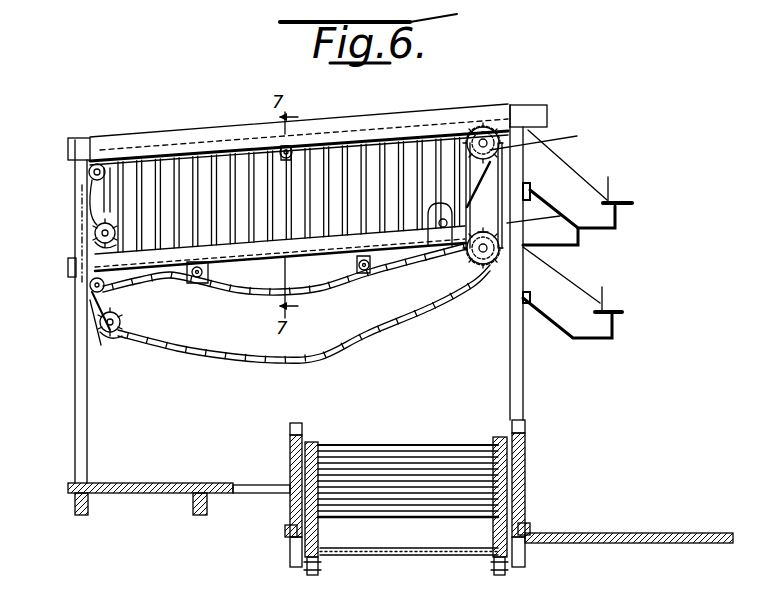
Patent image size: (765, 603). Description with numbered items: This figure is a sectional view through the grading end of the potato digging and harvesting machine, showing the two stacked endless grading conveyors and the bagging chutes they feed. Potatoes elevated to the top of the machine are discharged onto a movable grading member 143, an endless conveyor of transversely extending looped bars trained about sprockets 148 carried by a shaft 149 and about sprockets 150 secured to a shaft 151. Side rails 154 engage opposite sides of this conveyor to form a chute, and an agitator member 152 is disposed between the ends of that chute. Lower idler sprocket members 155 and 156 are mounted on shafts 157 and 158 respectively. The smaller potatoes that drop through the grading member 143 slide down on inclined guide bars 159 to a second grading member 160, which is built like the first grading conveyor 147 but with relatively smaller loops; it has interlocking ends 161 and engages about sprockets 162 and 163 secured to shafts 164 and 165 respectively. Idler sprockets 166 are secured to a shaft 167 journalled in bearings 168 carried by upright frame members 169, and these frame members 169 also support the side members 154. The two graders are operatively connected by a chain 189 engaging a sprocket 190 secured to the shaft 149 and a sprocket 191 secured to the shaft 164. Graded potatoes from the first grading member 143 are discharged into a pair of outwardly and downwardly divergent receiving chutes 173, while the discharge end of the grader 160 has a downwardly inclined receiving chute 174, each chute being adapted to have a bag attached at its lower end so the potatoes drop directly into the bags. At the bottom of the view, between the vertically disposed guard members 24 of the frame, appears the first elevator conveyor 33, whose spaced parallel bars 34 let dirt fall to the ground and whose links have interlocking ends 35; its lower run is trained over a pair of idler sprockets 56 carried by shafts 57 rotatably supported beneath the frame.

The guard member 24 is at (290, 450).
The conveyor 33 is at (391, 441).
The parallel bars 34 is at (447, 443).
The interlocking ends 35 is at (318, 442).
The idler sprockets 56 is at (320, 565).
The shafts 57 is at (412, 538).
The grading member 143 is at (397, 140).
The grading conveyor 147 is at (333, 283).
The sprockets 148 is at (551, 138).
The shaft 149 is at (486, 136).
The sprockets 150 is at (90, 177).
The shaft 151 is at (100, 163).
The agitator member 152 is at (293, 140).
The side rail 154 is at (178, 137).
The lower idler sprocket member 155 is at (100, 236).
The lower idler sprocket member 156 is at (425, 228).
The shaft 157 is at (90, 284).
The shaft 158 is at (448, 230).
The inclined guide bars 159 is at (213, 155).
The second grading member 160 is at (220, 352).
The interlocking ends 161 is at (407, 323).
The sprockets 162 is at (482, 285).
The sprockets 163 is at (107, 287).
The shaft 164 is at (503, 262).
The shaft 165 is at (89, 296).
The idler sprockets 166 is at (125, 321).
The shaft 167 is at (113, 332).
The bearings 168 is at (90, 327).
The upright frame members 169 is at (82, 430).
The receiving chutes 173 is at (570, 172).
The receiving chute 174 is at (570, 320).
The chain 189 is at (515, 210).
The sprocket 190 is at (492, 158).
The sprocket 191 is at (483, 237).